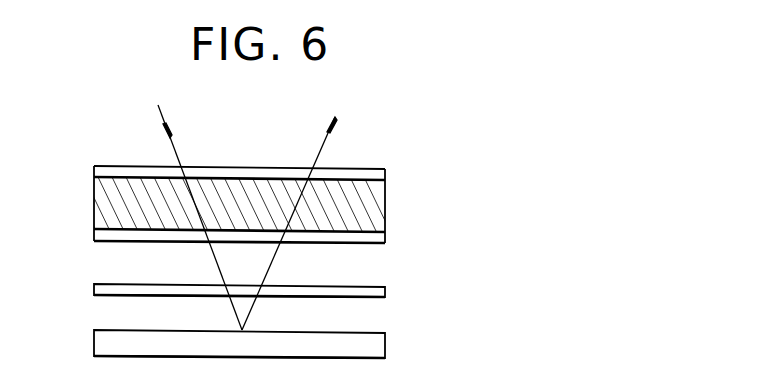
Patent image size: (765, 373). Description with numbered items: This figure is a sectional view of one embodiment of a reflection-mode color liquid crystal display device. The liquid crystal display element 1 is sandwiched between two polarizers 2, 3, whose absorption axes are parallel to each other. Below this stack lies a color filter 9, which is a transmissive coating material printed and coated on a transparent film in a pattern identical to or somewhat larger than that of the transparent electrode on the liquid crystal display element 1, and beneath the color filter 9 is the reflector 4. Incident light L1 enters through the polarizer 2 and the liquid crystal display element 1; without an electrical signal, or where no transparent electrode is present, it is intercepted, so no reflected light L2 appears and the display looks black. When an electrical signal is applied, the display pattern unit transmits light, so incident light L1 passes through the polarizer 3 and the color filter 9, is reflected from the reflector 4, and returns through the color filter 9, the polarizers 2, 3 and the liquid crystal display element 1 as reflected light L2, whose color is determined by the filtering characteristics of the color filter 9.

The liquid crystal display element 1 is at (385, 205).
The polarizer 2 is at (385, 173).
The polarizer 3 is at (385, 239).
The reflector 4 is at (385, 340).
The color filter 9 is at (385, 292).
The incident light L1 is at (194, 207).
The reflected light L2 is at (292, 210).